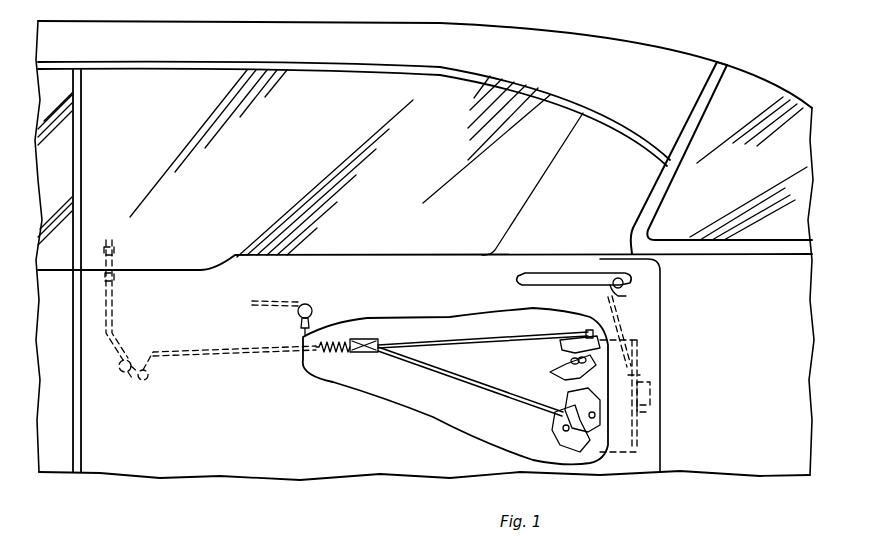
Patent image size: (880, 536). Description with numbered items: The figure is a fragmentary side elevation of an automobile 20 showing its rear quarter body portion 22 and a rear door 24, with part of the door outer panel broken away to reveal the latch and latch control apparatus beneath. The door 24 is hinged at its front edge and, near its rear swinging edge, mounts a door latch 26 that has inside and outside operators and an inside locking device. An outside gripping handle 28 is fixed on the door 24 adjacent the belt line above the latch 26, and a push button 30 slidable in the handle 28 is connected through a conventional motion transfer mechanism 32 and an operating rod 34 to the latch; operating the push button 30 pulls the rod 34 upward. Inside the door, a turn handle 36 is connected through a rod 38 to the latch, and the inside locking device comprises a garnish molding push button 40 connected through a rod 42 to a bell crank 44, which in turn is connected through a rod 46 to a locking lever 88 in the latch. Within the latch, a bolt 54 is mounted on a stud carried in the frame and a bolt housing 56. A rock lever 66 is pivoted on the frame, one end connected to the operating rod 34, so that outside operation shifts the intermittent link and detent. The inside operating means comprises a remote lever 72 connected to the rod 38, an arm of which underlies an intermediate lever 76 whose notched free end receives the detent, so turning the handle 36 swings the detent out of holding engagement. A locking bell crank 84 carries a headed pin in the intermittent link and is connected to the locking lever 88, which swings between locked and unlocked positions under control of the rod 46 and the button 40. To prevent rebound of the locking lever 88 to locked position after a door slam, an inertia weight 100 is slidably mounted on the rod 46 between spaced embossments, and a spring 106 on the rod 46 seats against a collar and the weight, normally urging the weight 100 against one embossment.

The automobile 20 is at (699, 52).
The rear quarter body portion 22 is at (705, 458).
The rear door 24 is at (232, 255).
The door latch 26 is at (649, 349).
The outside gripping handle 28 is at (550, 272).
The push button 30 is at (617, 270).
The motion transfer mechanism 32 is at (624, 298).
The operating rod 34 is at (615, 320).
The turn handle 36 is at (290, 300).
The rod 38 is at (428, 368).
The garnish molding push button 40 is at (112, 237).
The rod 42 is at (115, 320).
The bell crank 44 is at (128, 380).
The rod 46 is at (443, 340).
The bolt 54 is at (648, 414).
The bolt housing 56 is at (650, 385).
The rock lever 66 is at (632, 377).
The remote lever 72 is at (552, 420).
The intermediate lever 76 is at (572, 406).
The locking bell crank 84 is at (565, 372).
The locking lever 88 is at (556, 351).
The weight 100 is at (366, 338).
The spring 106 is at (326, 356).